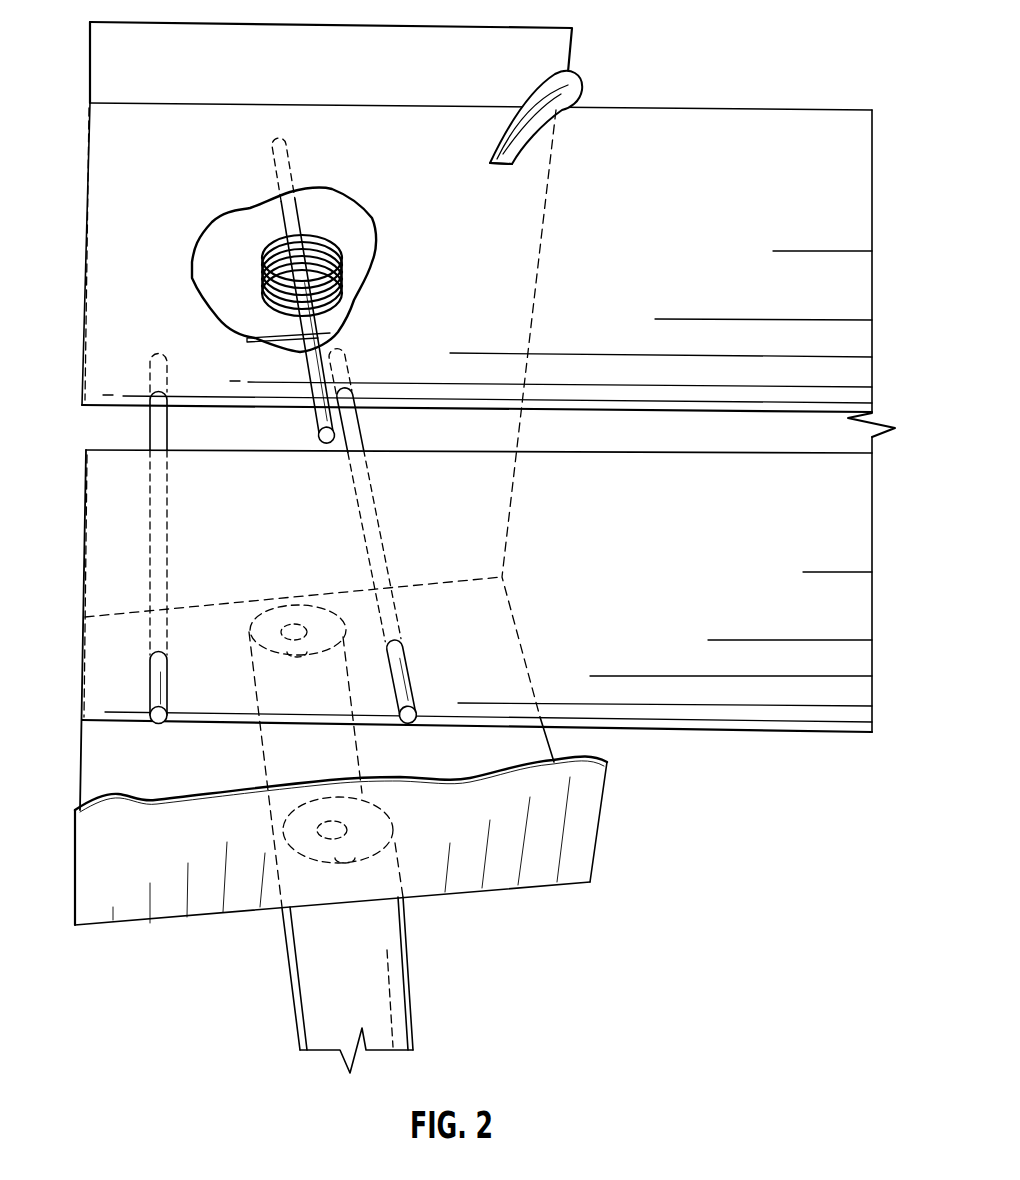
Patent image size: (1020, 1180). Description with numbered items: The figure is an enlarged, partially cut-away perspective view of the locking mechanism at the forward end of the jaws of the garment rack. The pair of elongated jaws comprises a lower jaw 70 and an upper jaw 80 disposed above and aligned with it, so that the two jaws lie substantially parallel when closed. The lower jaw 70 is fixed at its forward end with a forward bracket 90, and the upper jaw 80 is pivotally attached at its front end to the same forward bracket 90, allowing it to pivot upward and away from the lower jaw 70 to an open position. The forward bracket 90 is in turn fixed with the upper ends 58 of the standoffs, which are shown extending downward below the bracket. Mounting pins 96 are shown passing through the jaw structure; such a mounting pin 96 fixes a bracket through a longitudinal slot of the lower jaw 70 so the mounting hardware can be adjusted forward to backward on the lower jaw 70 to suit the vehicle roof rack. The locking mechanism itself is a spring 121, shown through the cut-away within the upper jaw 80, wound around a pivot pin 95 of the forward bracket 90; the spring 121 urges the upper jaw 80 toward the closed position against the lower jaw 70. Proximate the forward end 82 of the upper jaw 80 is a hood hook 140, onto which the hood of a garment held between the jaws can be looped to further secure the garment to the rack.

The upper end of standoff 58 is at (395, 977).
The lower jaw 70 is at (657, 480).
The upper jaw 80 is at (725, 137).
The forward end of upper jaw 82 is at (95, 130).
The forward bracket 90 is at (100, 903).
The pivot pin 95 is at (320, 372).
The mounting pin 96 is at (168, 522).
The spring 121 is at (312, 228).
The hood hook 140 is at (583, 75).